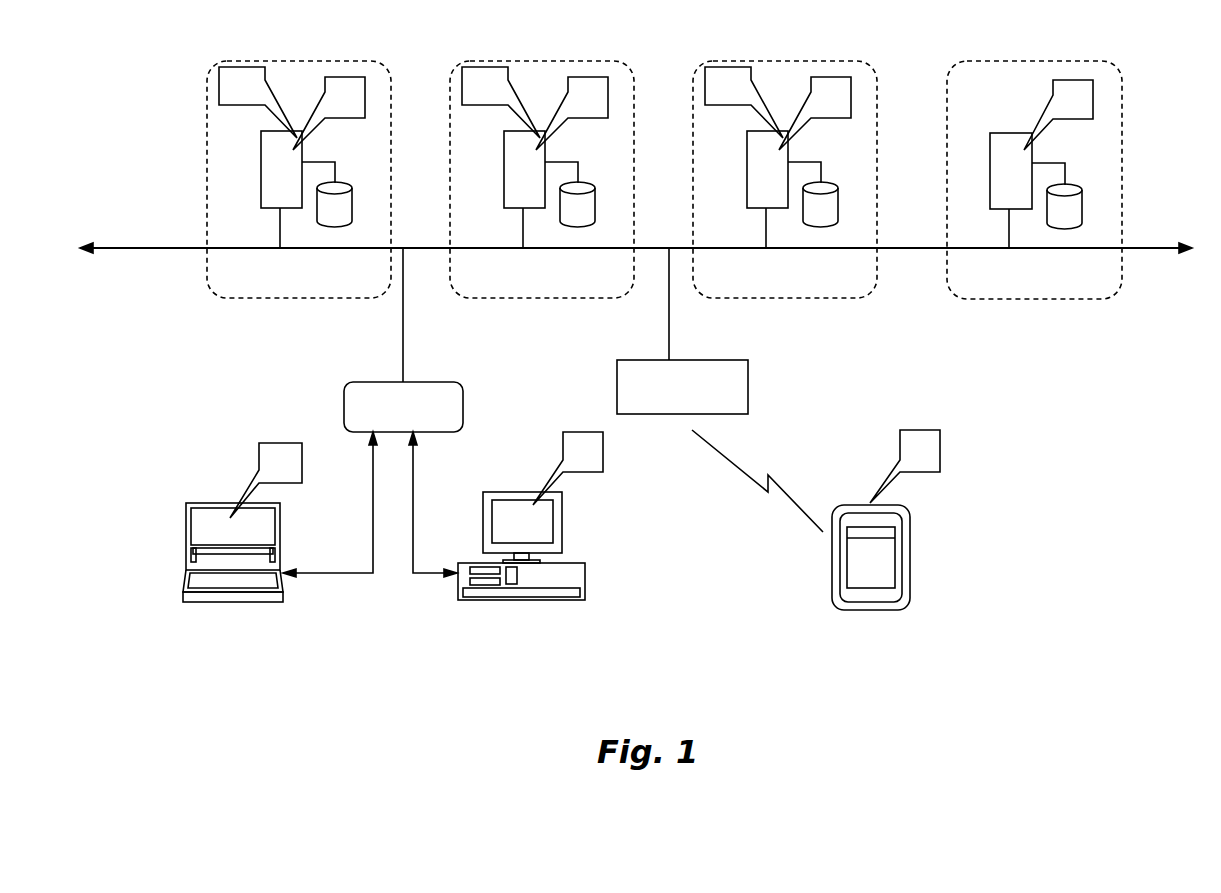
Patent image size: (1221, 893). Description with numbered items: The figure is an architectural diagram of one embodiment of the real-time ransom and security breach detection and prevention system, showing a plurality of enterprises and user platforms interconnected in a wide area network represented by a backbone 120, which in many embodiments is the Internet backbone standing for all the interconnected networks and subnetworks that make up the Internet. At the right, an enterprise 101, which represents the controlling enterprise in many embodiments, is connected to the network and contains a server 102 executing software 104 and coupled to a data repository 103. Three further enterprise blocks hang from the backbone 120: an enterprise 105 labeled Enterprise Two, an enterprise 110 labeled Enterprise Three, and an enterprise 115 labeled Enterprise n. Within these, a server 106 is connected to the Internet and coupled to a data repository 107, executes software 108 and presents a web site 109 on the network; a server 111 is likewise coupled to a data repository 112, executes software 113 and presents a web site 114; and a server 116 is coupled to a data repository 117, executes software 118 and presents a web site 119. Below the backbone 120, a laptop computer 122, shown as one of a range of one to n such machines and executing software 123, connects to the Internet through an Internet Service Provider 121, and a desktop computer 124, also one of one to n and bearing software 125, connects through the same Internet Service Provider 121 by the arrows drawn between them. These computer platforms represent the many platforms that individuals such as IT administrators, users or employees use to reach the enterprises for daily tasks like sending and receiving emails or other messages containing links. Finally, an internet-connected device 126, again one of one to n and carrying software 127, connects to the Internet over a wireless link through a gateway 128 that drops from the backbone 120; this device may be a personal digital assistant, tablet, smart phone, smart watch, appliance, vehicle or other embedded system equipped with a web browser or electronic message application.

The enterprise 101 is at (1121, 85).
The server 102 is at (990, 150).
The data repository 103 is at (1082, 198).
The software 104 is at (1053, 93).
The enterprise 2 105 is at (808, 179).
The server 106 is at (765, 189).
The data repository 107 is at (839, 212).
The software 108 is at (828, 92).
The web site 109 is at (754, 86).
The enterprise 3 110 is at (565, 179).
The server 111 is at (522, 189).
The data repository 112 is at (596, 212).
The software 113 is at (585, 92).
The web site 114 is at (511, 86).
The enterprise n 115 is at (391, 148).
The server 116 is at (261, 148).
The data repository 117 is at (352, 198).
The software 118 is at (335, 77).
The web site 119 is at (249, 67).
The backbone 120 is at (177, 250).
The Internet Service Provider 121 is at (344, 410).
The laptop computer 122 is at (210, 503).
The software 123 is at (259, 458).
The desktop computer 124 is at (573, 563).
The software 125 is at (563, 452).
The internet-connected device 126 is at (832, 540).
The software 127 is at (900, 448).
The gateway 128 is at (748, 385).